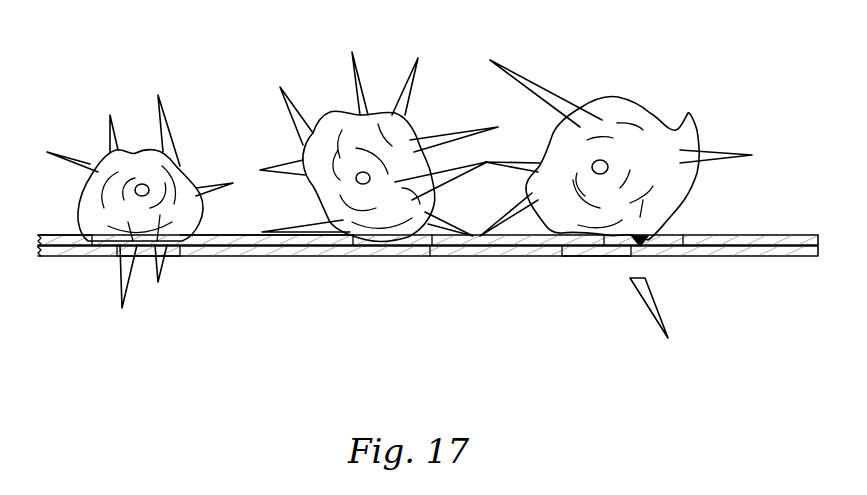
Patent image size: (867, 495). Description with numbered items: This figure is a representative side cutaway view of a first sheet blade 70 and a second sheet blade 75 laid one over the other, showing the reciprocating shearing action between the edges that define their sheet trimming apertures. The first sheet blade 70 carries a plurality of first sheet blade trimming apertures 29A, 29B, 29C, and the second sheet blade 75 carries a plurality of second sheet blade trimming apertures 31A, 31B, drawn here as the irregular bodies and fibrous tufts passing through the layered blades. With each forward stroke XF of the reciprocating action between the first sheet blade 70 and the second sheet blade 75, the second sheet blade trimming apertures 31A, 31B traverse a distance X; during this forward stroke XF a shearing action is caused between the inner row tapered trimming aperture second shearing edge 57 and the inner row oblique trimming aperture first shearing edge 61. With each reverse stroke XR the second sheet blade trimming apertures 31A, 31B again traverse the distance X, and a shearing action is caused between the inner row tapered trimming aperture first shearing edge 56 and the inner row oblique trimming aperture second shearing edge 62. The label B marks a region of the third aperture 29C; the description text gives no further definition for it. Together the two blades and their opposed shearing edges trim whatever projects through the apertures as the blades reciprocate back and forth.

The first sheet blade trimming aperture 29A is at (80, 190).
The first sheet blade trimming aperture 29B is at (430, 256).
The first sheet blade trimming aperture 29C is at (675, 238).
The second sheet blade trimming aperture 31A is at (145, 257).
The second sheet blade trimming aperture 31B is at (595, 252).
The inner row tapered trimming aperture first shearing edge 56 is at (78, 228).
The inner row tapered trimming aperture second shearing edge 57 is at (192, 230).
The inner row oblique trimming aperture first shearing edge 61 is at (118, 260).
The inner row oblique trimming aperture second shearing edge 62 is at (180, 258).
The first sheet blade 70 is at (753, 252).
The second sheet blade 75 is at (770, 240).
The bump region B is at (620, 97).
The forward stroke XF is at (118, 23).
The reverse stroke XR is at (534, 43).
The distance X is at (562, 366).